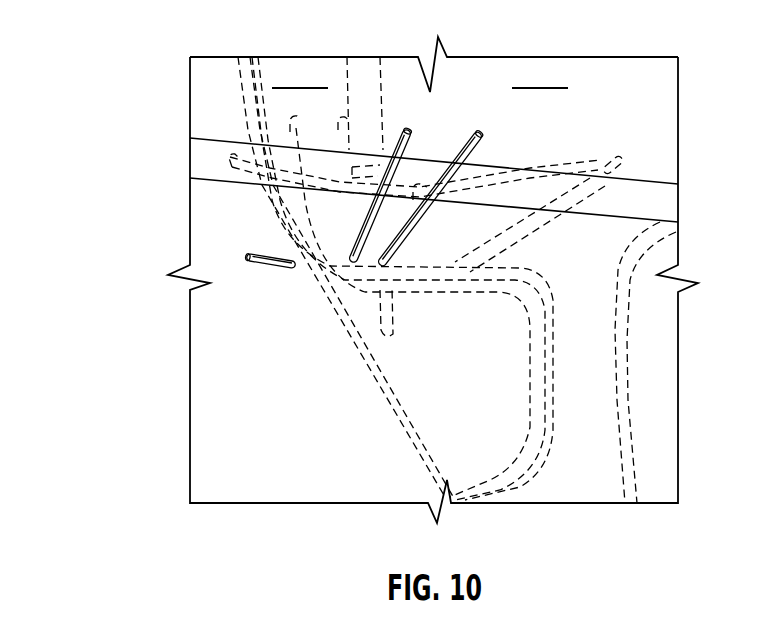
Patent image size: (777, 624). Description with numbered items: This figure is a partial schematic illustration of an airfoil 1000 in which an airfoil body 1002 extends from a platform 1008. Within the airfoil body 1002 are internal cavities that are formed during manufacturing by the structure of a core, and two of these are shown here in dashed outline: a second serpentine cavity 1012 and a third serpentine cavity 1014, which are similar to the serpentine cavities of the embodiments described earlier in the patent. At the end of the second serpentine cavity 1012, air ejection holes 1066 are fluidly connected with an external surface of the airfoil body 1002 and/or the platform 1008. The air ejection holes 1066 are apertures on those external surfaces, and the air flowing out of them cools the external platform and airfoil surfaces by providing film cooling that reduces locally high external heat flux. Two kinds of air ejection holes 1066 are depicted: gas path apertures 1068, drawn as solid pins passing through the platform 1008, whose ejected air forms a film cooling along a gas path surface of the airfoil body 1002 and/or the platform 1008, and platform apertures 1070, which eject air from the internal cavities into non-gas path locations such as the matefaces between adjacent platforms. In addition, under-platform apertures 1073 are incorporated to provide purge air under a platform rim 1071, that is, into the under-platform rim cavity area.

The airfoil 1000 is at (105, 128).
The airfoil body 1002 is at (198, 73).
The platform 1008 is at (203, 132).
The second serpentine cavity 1012 is at (300, 73).
The third serpentine cavity 1014 is at (540, 73).
The air ejection holes 1066 is at (243, 140).
The gas path apertures 1068 is at (411, 122).
The platform apertures 1070 is at (195, 180).
The platform rim 1071 is at (218, 160).
The under-platform apertures 1073 is at (257, 271).